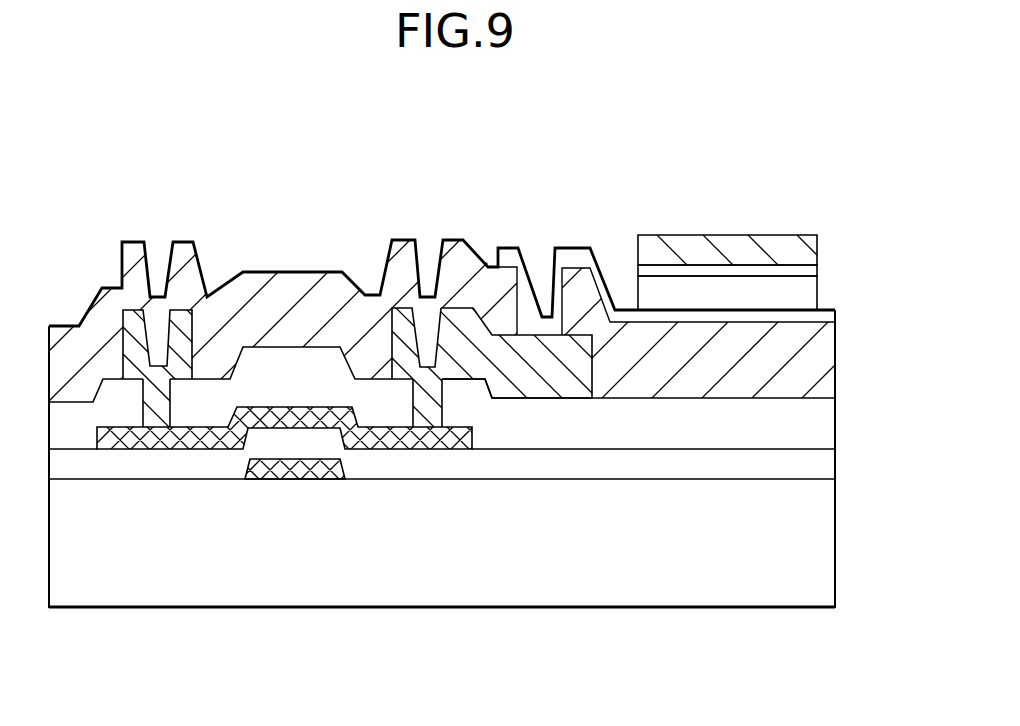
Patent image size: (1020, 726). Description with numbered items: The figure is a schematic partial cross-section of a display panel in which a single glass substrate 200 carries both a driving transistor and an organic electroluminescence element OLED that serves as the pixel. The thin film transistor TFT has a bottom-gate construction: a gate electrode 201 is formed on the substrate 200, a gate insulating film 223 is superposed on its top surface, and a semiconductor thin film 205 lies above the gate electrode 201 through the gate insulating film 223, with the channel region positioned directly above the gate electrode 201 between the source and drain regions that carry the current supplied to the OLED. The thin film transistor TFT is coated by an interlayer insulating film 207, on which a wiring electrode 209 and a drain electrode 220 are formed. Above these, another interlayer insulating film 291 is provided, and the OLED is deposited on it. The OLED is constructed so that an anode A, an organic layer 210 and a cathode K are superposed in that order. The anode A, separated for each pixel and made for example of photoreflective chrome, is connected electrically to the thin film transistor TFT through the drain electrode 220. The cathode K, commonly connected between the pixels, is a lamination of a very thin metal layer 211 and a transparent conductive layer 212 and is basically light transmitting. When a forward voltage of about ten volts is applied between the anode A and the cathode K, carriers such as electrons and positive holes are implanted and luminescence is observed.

The substrate 200 is at (836, 548).
The gate insulating film 223 is at (836, 463).
The gate electrode 201 is at (309, 476).
The semiconductor thin film 205 is at (207, 447).
The thin film transistor TFT is at (288, 512).
The interlayer insulating film 207 is at (836, 418).
The wiring electrode 209 is at (190, 317).
The drain electrode 220 is at (524, 345).
The interlayer insulating film 291 is at (456, 241).
The anode A is at (833, 316).
The cathode K is at (622, 278).
The organic layer 210 is at (814, 292).
The very thin metal layer 211 is at (818, 270).
The transparent conductive layer 212 is at (814, 254).
The organic electroluminescence element OLED is at (729, 199).